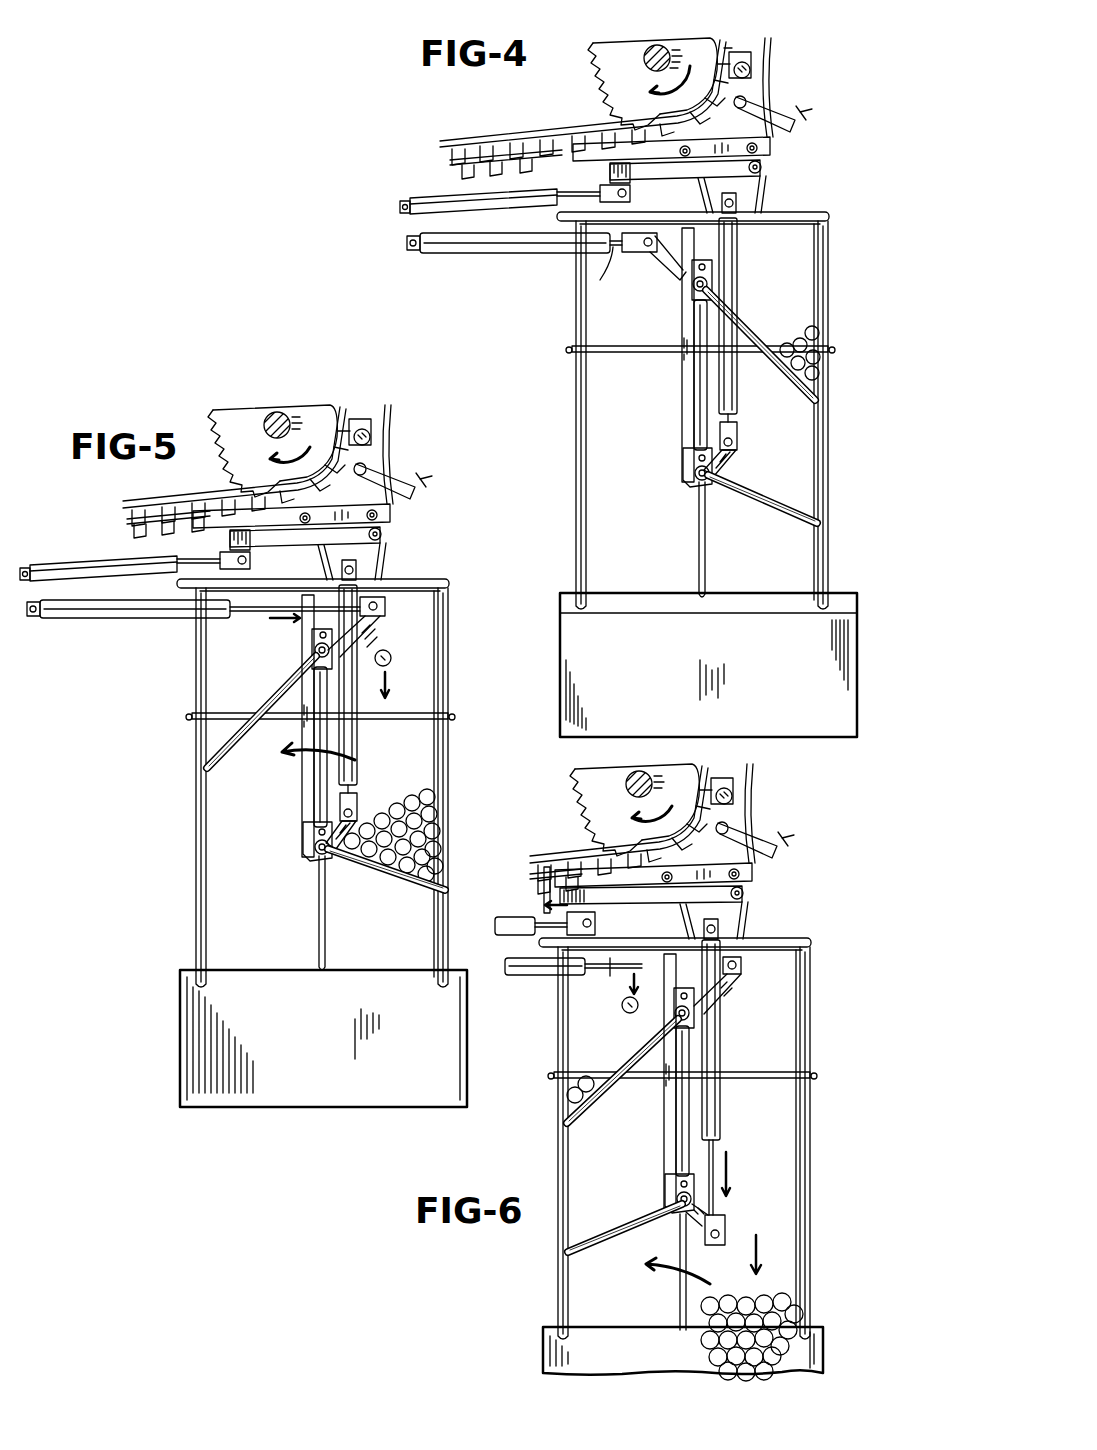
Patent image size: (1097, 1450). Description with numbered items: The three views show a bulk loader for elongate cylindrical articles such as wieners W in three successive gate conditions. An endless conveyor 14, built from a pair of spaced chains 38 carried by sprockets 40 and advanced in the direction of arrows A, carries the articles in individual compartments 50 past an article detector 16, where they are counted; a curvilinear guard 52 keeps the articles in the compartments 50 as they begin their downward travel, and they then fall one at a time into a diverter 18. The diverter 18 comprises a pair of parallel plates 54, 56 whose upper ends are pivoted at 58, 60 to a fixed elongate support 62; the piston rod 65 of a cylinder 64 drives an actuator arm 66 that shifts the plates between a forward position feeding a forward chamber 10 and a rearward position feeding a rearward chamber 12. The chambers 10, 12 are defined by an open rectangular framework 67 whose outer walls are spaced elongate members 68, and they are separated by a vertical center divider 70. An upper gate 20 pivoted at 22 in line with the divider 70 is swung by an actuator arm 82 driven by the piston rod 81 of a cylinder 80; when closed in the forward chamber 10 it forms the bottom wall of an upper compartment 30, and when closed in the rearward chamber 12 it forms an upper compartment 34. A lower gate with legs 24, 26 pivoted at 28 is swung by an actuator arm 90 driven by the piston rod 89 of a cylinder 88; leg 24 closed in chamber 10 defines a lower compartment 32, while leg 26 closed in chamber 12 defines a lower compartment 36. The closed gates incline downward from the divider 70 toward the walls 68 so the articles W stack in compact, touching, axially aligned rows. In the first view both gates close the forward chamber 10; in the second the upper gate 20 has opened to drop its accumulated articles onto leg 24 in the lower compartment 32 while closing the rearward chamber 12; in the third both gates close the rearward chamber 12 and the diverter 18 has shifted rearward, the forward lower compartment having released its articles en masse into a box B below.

In FIG. 4, the forward article-receptive chamber 10 is at (820, 272).
In FIG. 5, the forward article-receptive chamber 10 is at (458, 784).
In FIG. 6, the forward article-receptive chamber 10 is at (828, 1138).
In FIG. 4, the rearward article-receptive chamber 12 is at (604, 374).
In FIG. 5, the rearward article-receptive chamber 12 is at (289, 763).
In FIG. 6, the rearward article-receptive chamber 12 is at (666, 1112).
In FIG. 4, the endless conveyor 14 is at (524, 92).
In FIG. 5, the endless conveyor 14 is at (333, 386).
In FIG. 6, the endless conveyor 14 is at (551, 786).
In FIG. 4, the article detector 16 is at (760, 98).
In FIG. 5, the article detector 16 is at (404, 461).
In FIG. 6, the article detector 16 is at (763, 830).
In FIG. 4, the diverter 18 is at (799, 184).
In FIG. 5, the diverter 18 is at (444, 541).
In FIG. 6, the diverter 18 is at (770, 914).
In FIG. 4, the upper gate 20 is at (770, 322).
In FIG. 5, the upper gate 20 is at (281, 713).
In FIG. 6, the upper gate 20 is at (622, 1071).
In FIG. 4, the upper gate pivot mounting 22 is at (692, 284).
In FIG. 5, the upper gate pivot mounting 22 is at (297, 649).
In FIG. 6, the upper gate pivot mounting 22 is at (716, 1008).
In FIG. 4, the lower gate leg 24 is at (785, 513).
In FIG. 5, the lower gate leg 24 is at (386, 876).
In FIG. 6, the lower gate leg 24 is at (678, 1272).
In FIG. 4, the lower gate leg 26 is at (706, 558).
In FIG. 5, the lower gate leg 26 is at (301, 913).
In FIG. 6, the lower gate leg 26 is at (625, 1224).
In FIG. 4, the lower gate pivot mounting 28 is at (695, 486).
In FIG. 5, the lower gate pivot mounting 28 is at (300, 847).
In FIG. 6, the lower gate pivot mounting 28 is at (656, 1190).
In FIG. 4, the upper compartment 30 is at (812, 318).
In FIG. 4, the lower compartment 32 is at (812, 478).
In FIG. 5, the lower compartment 32 is at (464, 776).
In FIG. 5, the upper compartment 34 is at (179, 701).
In FIG. 6, the upper compartment 34 is at (538, 1049).
In FIG. 6, the lower compartment 36 is at (538, 1246).
In FIG. 4, the chains 38 is at (440, 143).
In FIG. 5, the chains 38 is at (236, 466).
In FIG. 6, the chains 38 is at (621, 823).
In FIG. 4, the sprockets 40 is at (652, 70).
In FIG. 5, the sprockets 40 is at (272, 445).
In FIG. 6, the sprockets 40 is at (634, 800).
In FIG. 4, the individual compartments 50 is at (508, 170).
In FIG. 5, the individual compartments 50 is at (168, 529).
In FIG. 6, the individual compartments 50 is at (549, 859).
In FIG. 4, the curvilinear guard 52 is at (772, 46).
In FIG. 5, the curvilinear guard 52 is at (408, 454).
In FIG. 6, the curvilinear guard 52 is at (772, 813).
In FIG. 4, the diverter plate 54 is at (745, 196).
In FIG. 5, the diverter plate 54 is at (383, 561).
In FIG. 6, the diverter plate 54 is at (701, 920).
In FIG. 4, the diverter plate 56 is at (700, 192).
In FIG. 5, the diverter plate 56 is at (305, 553).
In FIG. 6, the diverter plate 56 is at (651, 912).
In FIG. 4, the pivot mounting of plate 54 58 is at (760, 152).
In FIG. 5, the pivot mounting of plate 54 58 is at (403, 516).
In FIG. 6, the pivot mounting of plate 54 58 is at (762, 871).
In FIG. 4, the pivot mounting of plate 56 60 is at (680, 170).
In FIG. 5, the pivot mounting of plate 56 60 is at (260, 554).
In FIG. 6, the pivot mounting of plate 56 60 is at (635, 890).
In FIG. 4, the elongate support 62 is at (775, 146).
In FIG. 5, the elongate support 62 is at (323, 503).
In FIG. 6, the elongate support 62 is at (683, 860).
In FIG. 4, the cylinder 64 is at (440, 200).
In FIG. 5, the cylinder 64 is at (120, 557).
In FIG. 6, the cylinder 64 is at (531, 908).
In FIG. 4, the piston rod 65 is at (610, 176).
In FIG. 5, the piston rod 65 is at (228, 541).
In FIG. 6, the piston rod 65 is at (531, 888).
In FIG. 4, the actuator arm 66 is at (762, 172).
In FIG. 5, the actuator arm 66 is at (397, 536).
In FIG. 6, the actuator arm 66 is at (761, 893).
In FIG. 4, the rectangular framework 67 is at (826, 220).
In FIG. 5, the rectangular framework 67 is at (336, 577).
In FIG. 6, the rectangular framework 67 is at (692, 935).
In FIG. 4, the elongate members 68 is at (576, 498).
In FIG. 5, the elongate members 68 is at (328, 787).
In FIG. 6, the elongate members 68 is at (679, 1143).
In FIG. 4, the center divider 70 is at (694, 410).
In FIG. 5, the center divider 70 is at (297, 726).
In FIG. 6, the center divider 70 is at (652, 1081).
In FIG. 4, the cylinder 80 is at (530, 245).
In FIG. 5, the cylinder 80 is at (193, 625).
In FIG. 6, the cylinder 80 is at (573, 983).
In FIG. 4, the piston rod 81 is at (601, 277).
In FIG. 5, the piston rod 81 is at (256, 629).
In FIG. 6, the piston rod 81 is at (594, 980).
In FIG. 4, the actuator arm 82 is at (660, 260).
In FIG. 5, the actuator arm 82 is at (364, 627).
In FIG. 6, the actuator arm 82 is at (735, 985).
In FIG. 4, the cylinder 88 is at (736, 398).
In FIG. 5, the cylinder 88 is at (369, 685).
In FIG. 6, the cylinder 88 is at (731, 1040).
In FIG. 4, the piston rod 89 is at (737, 424).
In FIG. 5, the piston rod 89 is at (370, 792).
In FIG. 6, the piston rod 89 is at (733, 1171).
In FIG. 4, the actuator arm 90 is at (735, 462).
In FIG. 5, the actuator arm 90 is at (309, 829).
In FIG. 6, the actuator arm 90 is at (723, 1234).
In FIG. 4, the wieners W is at (752, 68).
In FIG. 5, the wieners W is at (415, 640).
In FIG. 6, the wieners W is at (678, 1074).
In FIG. 4, the box B is at (580, 650).
In FIG. 5, the box B is at (302, 1038).
In FIG. 6, the box B is at (692, 1351).
In FIG. 4, the arrows A is at (653, 80).
In FIG. 5, the arrows A is at (290, 440).
In FIG. 6, the arrows A is at (652, 799).